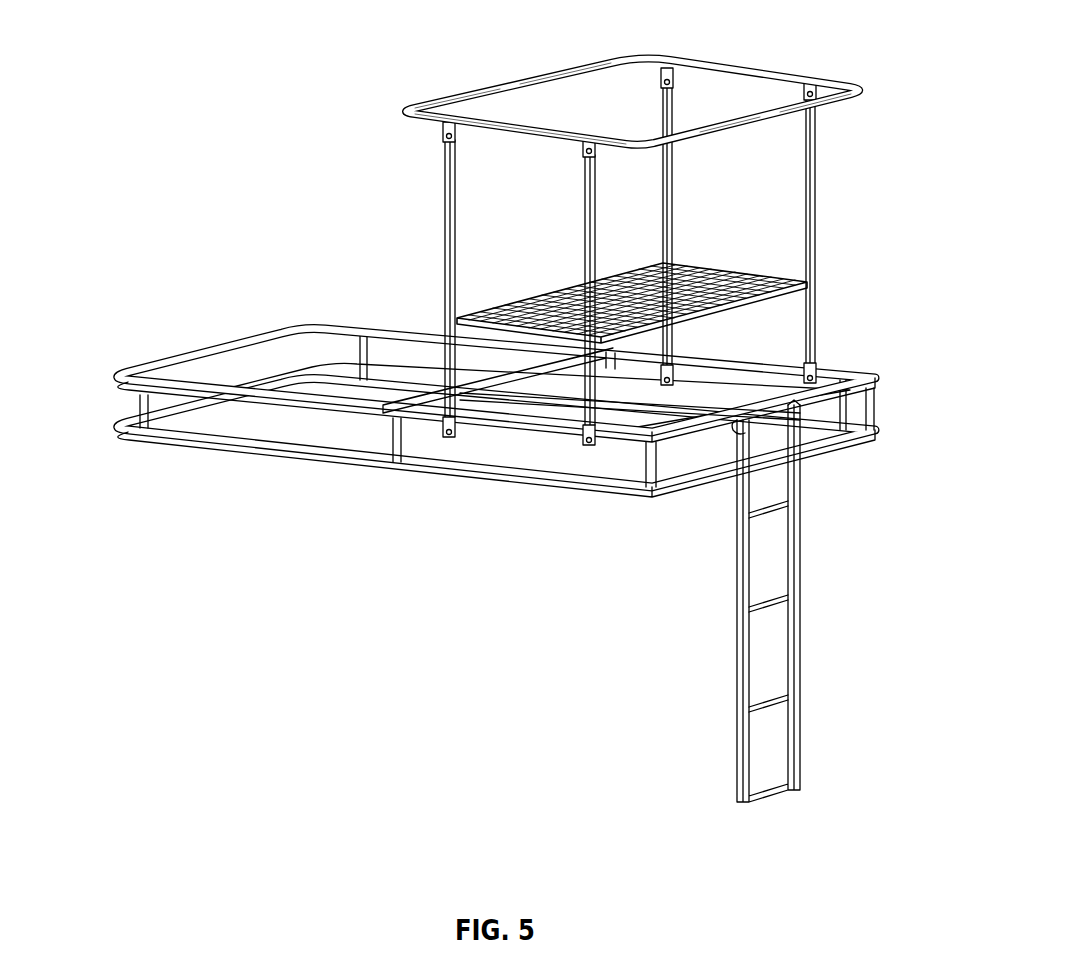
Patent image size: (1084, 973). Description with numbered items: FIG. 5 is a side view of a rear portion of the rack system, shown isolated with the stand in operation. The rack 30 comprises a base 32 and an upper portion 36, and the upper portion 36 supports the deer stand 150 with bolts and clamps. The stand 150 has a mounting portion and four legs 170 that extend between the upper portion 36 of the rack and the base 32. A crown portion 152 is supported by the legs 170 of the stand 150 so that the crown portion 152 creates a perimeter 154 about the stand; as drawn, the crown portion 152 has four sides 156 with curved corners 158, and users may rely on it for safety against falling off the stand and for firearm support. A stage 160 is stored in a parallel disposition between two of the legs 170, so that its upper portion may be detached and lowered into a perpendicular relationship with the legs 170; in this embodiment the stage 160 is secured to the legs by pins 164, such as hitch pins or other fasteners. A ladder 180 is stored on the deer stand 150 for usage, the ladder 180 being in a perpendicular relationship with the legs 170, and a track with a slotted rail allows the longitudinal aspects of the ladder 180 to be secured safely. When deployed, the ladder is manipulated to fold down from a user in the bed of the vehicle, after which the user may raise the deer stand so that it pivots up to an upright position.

The bed frame 30 is at (96, 364).
The base 32 is at (880, 432).
The upper portion 36 is at (880, 380).
The stand 150 is at (378, 214).
The crown portion 152 is at (870, 72).
The perimeter 154 is at (397, 130).
The sides 156 is at (520, 80).
The curved corners 158 is at (397, 113).
The stage 160 is at (727, 309).
The pins 164 is at (445, 318).
The legs 170 is at (683, 213).
The ladder 180 is at (822, 556).